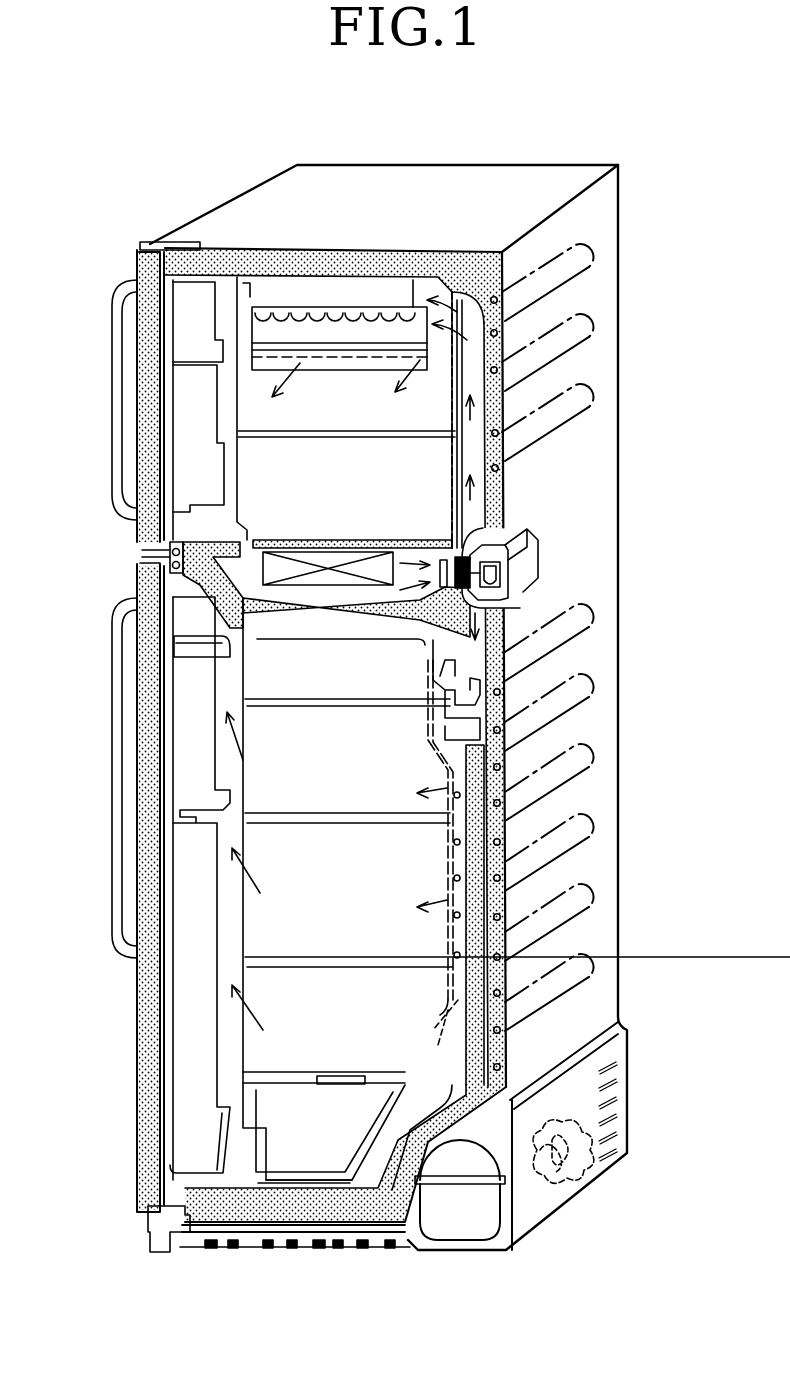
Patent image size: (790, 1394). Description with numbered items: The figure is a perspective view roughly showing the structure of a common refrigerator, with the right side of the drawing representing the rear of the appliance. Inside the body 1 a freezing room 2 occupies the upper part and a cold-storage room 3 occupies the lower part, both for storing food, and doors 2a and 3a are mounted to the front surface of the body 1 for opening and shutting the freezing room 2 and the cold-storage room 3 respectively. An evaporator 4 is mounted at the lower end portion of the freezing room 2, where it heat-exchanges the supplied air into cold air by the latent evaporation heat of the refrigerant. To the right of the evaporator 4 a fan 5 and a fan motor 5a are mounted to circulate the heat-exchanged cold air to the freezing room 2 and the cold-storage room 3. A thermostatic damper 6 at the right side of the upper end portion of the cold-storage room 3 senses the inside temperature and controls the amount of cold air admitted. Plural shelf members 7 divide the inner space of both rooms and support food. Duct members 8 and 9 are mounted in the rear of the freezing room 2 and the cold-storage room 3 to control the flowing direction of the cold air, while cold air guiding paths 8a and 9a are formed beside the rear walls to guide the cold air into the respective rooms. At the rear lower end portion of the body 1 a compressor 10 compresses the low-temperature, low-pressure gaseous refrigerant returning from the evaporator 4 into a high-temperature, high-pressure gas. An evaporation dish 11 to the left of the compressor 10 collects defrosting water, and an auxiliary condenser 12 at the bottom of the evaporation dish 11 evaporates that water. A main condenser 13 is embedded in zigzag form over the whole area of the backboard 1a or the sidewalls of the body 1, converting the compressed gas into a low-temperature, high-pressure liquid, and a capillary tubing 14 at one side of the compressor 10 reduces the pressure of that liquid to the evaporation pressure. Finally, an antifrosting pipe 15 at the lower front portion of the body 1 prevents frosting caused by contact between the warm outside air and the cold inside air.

The body 1 is at (620, 197).
The backboard 1a is at (598, 478).
The freezing room 2 is at (272, 409).
The door 2a is at (150, 332).
The cold-storage room 3 is at (265, 920).
The door 3a is at (142, 906).
The evaporator 4 is at (192, 583).
The fan 5 is at (500, 572).
The fan motor 5a is at (500, 522).
The thermostatic damper 6 is at (482, 720).
The shelf members 7 is at (283, 437).
The duct member 8 is at (470, 452).
The cold air guiding path 8a is at (470, 382).
The duct member 9 is at (466, 945).
The cold air guiding path 9a is at (468, 858).
The compressor 10 is at (469, 1240).
The evaporation dish 11 is at (217, 1233).
The auxiliary condenser 12 is at (292, 1247).
The main condenser 13 is at (591, 776).
The capillary tubing 14 is at (560, 1163).
The antifrosting pipe 15 is at (153, 244).